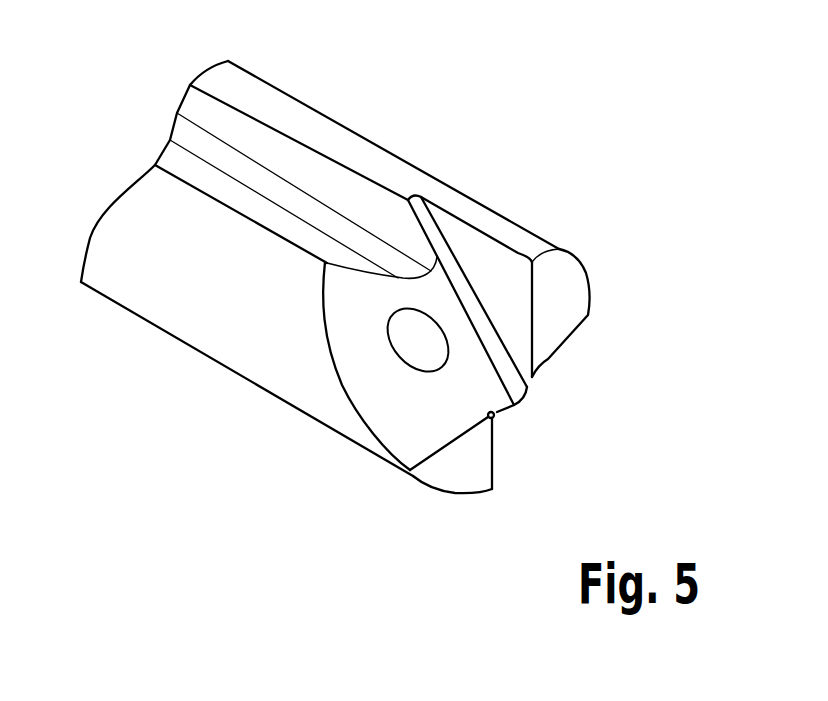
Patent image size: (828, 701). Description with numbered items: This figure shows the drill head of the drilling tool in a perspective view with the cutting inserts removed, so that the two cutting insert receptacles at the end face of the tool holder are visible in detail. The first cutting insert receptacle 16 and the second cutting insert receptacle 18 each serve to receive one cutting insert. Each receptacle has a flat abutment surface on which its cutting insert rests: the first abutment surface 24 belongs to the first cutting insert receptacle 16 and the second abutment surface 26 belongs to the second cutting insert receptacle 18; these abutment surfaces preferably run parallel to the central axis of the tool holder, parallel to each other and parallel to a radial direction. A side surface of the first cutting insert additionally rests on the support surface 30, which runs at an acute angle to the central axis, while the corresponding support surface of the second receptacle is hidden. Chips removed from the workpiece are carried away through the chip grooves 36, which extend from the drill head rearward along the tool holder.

The first cutting insert receptacle 16 is at (511, 291).
The second cutting insert receptacle 18 is at (493, 437).
The first abutment surface 24 is at (483, 273).
The second abutment surface 26 is at (493, 470).
The support surface 30 is at (485, 333).
The chip groove 36 is at (247, 163).